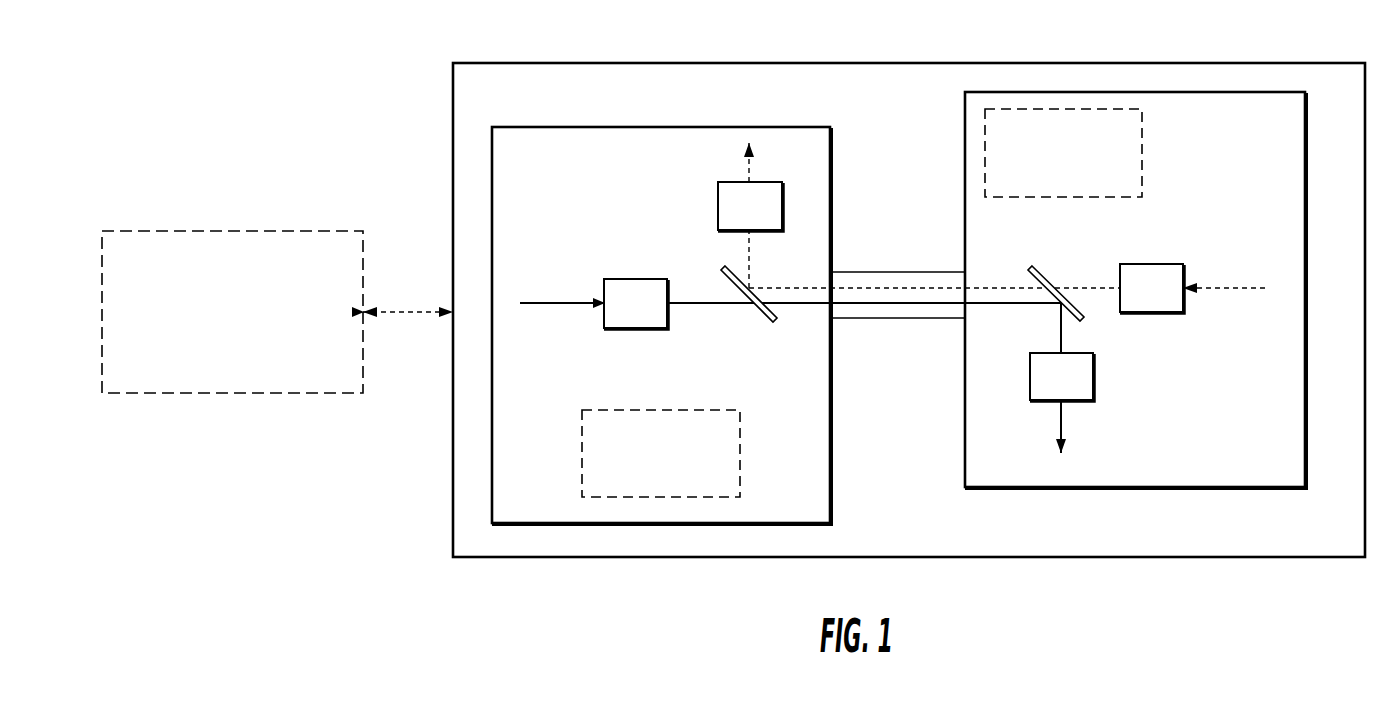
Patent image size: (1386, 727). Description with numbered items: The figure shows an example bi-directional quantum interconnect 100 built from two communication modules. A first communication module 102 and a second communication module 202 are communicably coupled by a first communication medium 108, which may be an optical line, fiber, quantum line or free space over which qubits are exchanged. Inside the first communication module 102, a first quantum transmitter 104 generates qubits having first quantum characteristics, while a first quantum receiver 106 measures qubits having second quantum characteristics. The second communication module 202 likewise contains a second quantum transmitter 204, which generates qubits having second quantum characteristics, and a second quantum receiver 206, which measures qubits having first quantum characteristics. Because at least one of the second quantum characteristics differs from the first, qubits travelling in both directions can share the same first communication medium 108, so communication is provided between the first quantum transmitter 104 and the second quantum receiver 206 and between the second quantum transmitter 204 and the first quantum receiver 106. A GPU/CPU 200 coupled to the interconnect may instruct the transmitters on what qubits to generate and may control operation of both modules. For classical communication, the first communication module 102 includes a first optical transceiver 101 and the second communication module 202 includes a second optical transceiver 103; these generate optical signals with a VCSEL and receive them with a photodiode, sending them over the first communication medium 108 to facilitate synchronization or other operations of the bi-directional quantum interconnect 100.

The bi-directional quantum interconnect 100 is at (597, 63).
The first optical transceiver 101 is at (740, 447).
The first communication module 102 is at (491, 190).
The second optical transceiver 103 is at (1142, 160).
The first quantum transmitter 104 is at (635, 328).
The first quantum receiver 106 is at (718, 197).
The first communication medium 108 is at (884, 262).
The GPU/CPU 200 is at (190, 227).
The second communication module 202 is at (1220, 92).
The second quantum transmitter 204 is at (1158, 316).
The second quantum receiver 206 is at (1080, 410).